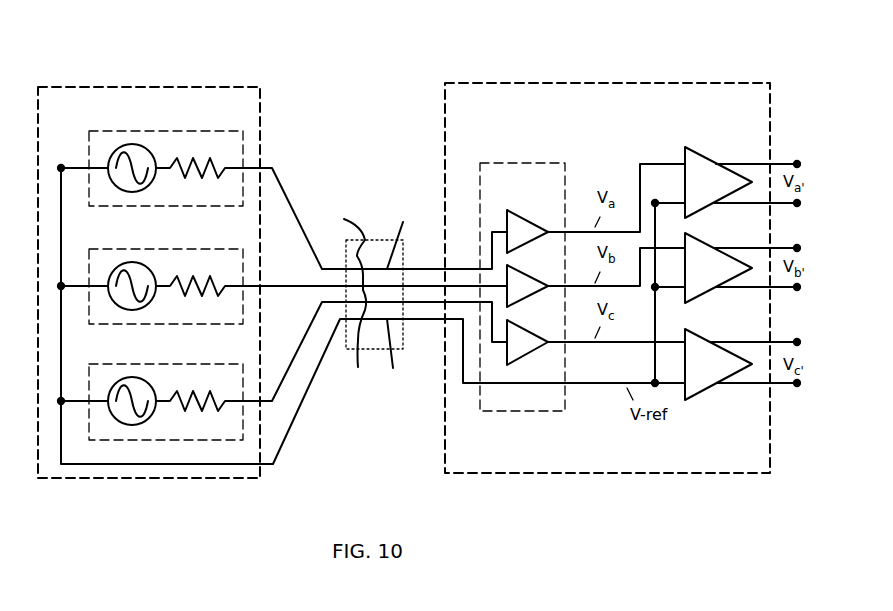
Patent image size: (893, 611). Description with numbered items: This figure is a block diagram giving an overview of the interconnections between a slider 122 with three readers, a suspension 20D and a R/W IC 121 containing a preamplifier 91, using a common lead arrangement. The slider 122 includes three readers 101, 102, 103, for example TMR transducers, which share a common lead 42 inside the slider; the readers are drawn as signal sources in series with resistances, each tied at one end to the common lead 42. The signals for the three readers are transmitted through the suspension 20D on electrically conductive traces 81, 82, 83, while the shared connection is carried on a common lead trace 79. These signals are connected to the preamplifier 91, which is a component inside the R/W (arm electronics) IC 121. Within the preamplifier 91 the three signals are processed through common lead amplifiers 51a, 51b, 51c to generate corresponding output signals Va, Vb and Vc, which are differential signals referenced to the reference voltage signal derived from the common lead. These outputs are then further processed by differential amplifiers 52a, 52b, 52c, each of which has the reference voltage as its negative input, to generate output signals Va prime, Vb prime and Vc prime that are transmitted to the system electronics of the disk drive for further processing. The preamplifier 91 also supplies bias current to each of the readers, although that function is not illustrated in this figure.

The slider 122 is at (95, 80).
The reader 101 is at (167, 131).
The reader 102 is at (167, 249).
The reader 103 is at (167, 364).
The common lead 42 is at (138, 465).
The suspension 20D is at (382, 238).
The electrically conductive trace 81 is at (402, 235).
The electrically conductive trace 82 is at (343, 246).
The electrically conductive trace 83 is at (362, 340).
The common lead trace 79 is at (397, 355).
The R/W IC 121 is at (492, 78).
The preamplifier 91 is at (520, 160).
The common lead amplifier 51a is at (532, 222).
The common lead amplifier 51b is at (532, 276).
The common lead amplifier 51c is at (532, 332).
The differential amplifier 52a is at (708, 153).
The differential amplifier 52b is at (707, 243).
The differential amplifier 52c is at (704, 338).